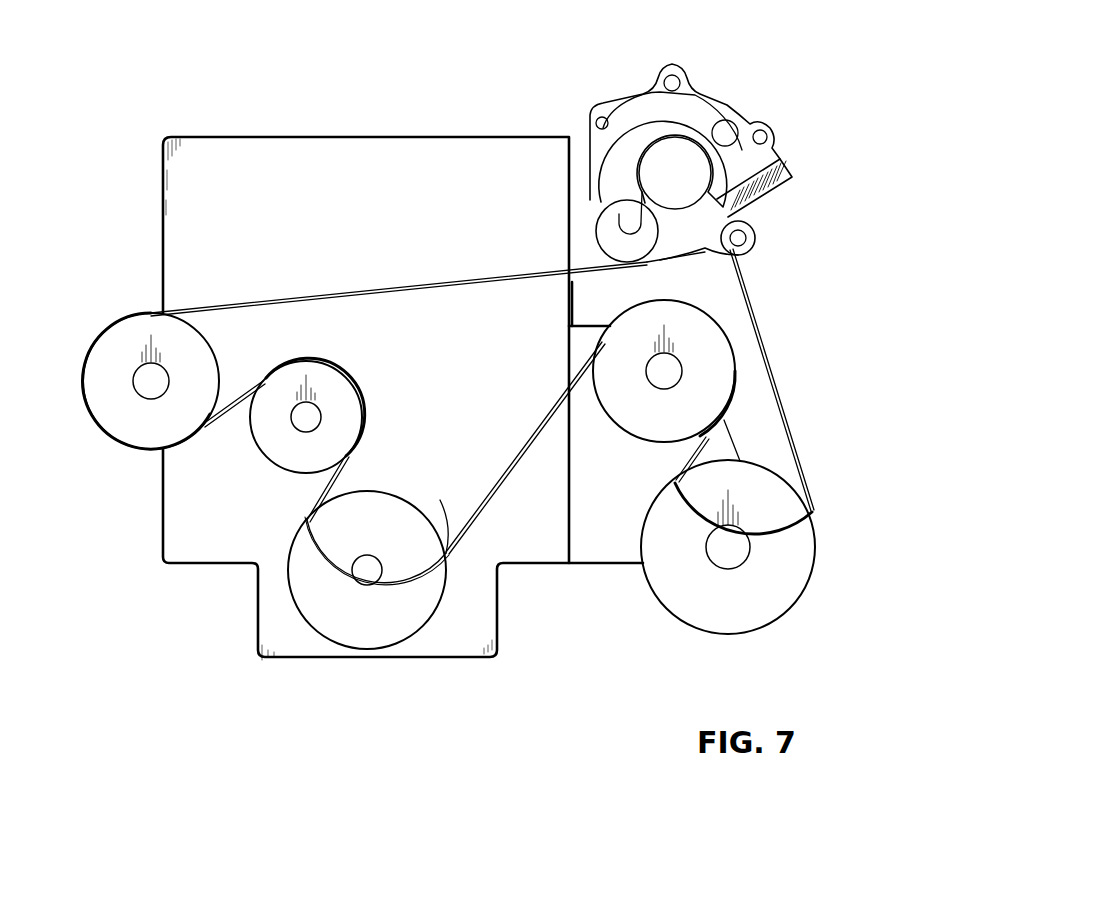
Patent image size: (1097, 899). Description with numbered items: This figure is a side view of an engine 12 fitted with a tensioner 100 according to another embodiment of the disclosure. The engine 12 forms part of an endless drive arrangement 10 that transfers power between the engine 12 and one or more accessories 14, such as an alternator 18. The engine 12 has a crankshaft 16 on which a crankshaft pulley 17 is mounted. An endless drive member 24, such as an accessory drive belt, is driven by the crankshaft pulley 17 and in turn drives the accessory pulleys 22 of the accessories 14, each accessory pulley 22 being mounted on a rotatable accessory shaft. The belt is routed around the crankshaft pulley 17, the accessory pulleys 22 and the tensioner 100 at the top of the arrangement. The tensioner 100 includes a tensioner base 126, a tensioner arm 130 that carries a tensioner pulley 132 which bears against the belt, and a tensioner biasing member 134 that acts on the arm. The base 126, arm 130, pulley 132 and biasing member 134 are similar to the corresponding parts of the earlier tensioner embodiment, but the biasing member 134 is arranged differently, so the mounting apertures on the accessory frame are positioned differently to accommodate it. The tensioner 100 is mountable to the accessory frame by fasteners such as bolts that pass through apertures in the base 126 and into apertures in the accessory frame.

The endless drive arrangement 10 is at (265, 187).
The engine 12 is at (274, 598).
The accessories 14 is at (522, 401).
The alternator 18 is at (742, 280).
The crankshaft 16 is at (372, 583).
The crankshaft pulley 17 is at (437, 545).
The accessory pulley 22 is at (710, 370).
The endless drive member 24 is at (233, 305).
The tensioner 100 is at (682, 145).
The tensioner base 126 is at (697, 95).
The tensioner arm 130 is at (655, 110).
The tensioner pulley 132 is at (600, 222).
The tensioner biasing member 134 is at (697, 178).